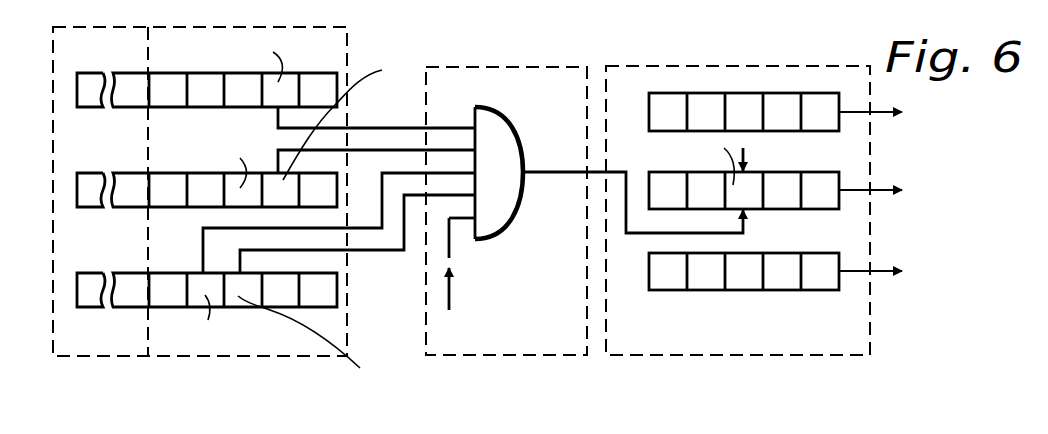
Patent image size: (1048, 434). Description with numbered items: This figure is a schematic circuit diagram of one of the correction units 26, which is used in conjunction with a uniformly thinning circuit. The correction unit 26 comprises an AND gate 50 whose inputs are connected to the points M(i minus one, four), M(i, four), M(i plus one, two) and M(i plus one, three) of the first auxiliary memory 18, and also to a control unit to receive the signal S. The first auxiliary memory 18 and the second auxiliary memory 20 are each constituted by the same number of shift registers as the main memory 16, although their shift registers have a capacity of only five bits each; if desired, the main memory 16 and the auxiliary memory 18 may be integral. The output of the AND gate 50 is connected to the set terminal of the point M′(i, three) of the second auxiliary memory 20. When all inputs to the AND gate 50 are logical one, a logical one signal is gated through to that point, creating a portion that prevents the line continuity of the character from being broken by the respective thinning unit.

The main memory 16 is at (110, 338).
The first auxiliary memory 18 is at (270, 345).
The second auxiliary memory 20 is at (753, 333).
The correction unit 26 is at (506, 234).
The AND gate 50 is at (498, 143).